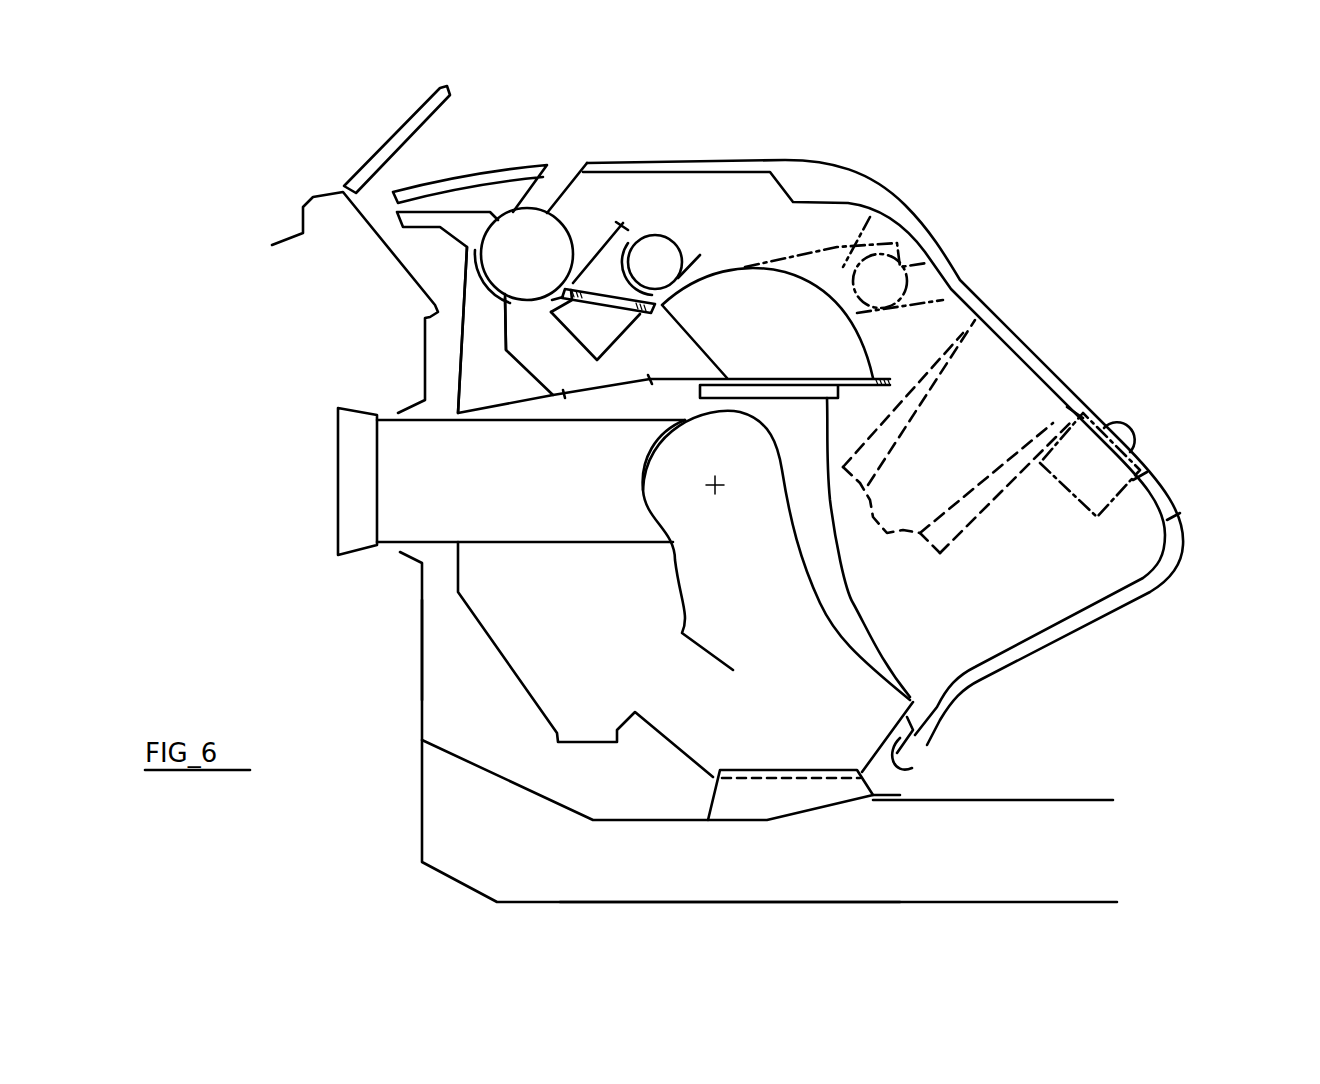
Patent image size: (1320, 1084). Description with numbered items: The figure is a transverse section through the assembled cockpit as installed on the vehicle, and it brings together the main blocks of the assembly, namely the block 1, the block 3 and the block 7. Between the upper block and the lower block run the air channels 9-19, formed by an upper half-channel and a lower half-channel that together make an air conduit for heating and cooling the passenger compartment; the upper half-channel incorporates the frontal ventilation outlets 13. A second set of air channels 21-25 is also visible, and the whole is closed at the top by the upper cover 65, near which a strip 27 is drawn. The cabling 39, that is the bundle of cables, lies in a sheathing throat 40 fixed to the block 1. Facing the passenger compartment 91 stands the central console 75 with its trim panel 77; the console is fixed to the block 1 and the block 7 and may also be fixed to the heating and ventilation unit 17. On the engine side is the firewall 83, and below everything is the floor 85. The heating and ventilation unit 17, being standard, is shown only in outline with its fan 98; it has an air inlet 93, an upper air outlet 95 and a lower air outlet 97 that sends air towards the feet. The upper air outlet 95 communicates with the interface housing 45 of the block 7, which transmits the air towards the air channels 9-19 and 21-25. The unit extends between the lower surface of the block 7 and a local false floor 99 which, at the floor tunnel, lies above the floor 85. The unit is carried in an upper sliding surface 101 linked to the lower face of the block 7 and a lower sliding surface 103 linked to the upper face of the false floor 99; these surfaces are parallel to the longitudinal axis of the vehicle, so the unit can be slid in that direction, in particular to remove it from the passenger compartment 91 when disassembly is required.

The block 1 is at (506, 208).
The block 3 is at (428, 230).
The block 7 is at (452, 377).
The ventilation outlets 13 is at (882, 205).
The heating and ventilation unit 17 is at (508, 674).
The air channels 21-25 is at (524, 279).
The guide strip 27 is at (562, 173).
The cabling 39 is at (662, 262).
The sheathing throat 40 is at (610, 273).
The interface housing 45 is at (611, 331).
The upper cover 65 is at (678, 158).
The central console 75 is at (1010, 397).
The trim panel 77 is at (1160, 487).
The firewall 83 is at (420, 622).
The floor 85 is at (632, 902).
The air channels 9-19 is at (767, 323).
The passenger compartment 91 is at (1278, 331).
The air inlet 93 is at (335, 477).
The upper air outlet 95 is at (590, 393).
The lower air outlet 97 is at (925, 765).
The fan 98 is at (776, 549).
The false floor 99 is at (940, 800).
The upper sliding surface 101 is at (777, 389).
The lower sliding surface 103 is at (745, 803).